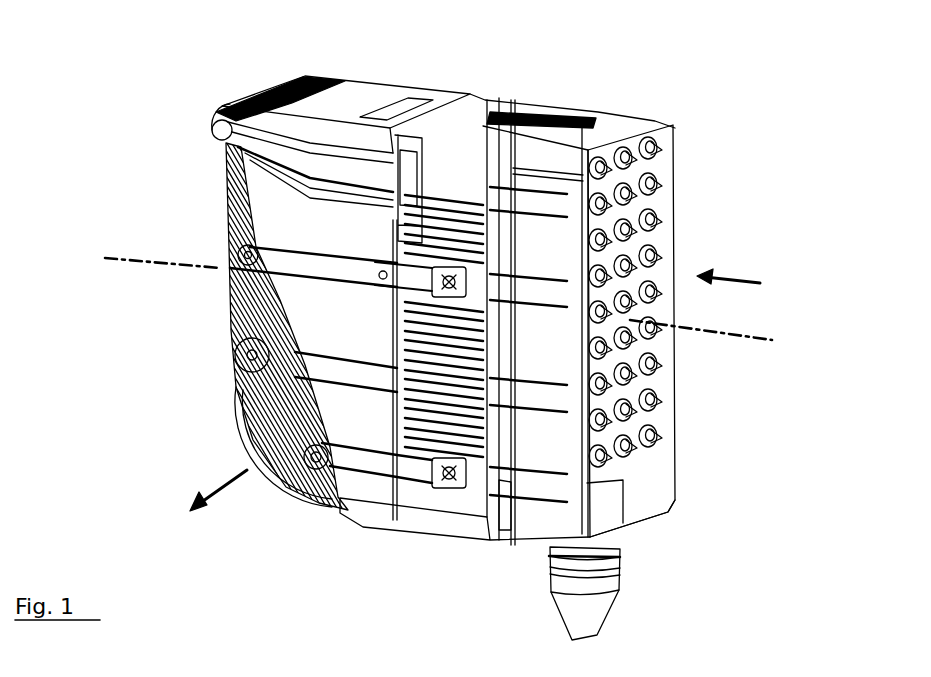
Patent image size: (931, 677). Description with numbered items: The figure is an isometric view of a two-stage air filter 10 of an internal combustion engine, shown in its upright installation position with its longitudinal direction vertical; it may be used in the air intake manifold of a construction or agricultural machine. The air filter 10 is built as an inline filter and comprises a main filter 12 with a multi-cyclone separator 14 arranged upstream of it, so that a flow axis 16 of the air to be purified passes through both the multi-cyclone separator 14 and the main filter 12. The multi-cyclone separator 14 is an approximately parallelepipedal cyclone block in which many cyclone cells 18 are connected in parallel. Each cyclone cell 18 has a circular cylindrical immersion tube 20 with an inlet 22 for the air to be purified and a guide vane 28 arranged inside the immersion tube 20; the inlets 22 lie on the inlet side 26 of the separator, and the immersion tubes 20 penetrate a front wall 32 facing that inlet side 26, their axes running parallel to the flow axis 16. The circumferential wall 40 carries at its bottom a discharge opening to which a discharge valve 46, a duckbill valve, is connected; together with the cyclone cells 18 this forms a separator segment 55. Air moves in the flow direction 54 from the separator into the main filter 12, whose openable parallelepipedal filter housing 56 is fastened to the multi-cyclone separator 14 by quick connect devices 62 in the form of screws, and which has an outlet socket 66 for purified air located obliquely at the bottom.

The two-stage air filter 10 is at (163, 62).
The main filter 12 is at (408, 90).
The multi-cyclone separator 14 is at (616, 96).
The flow axis 16 is at (772, 340).
The cyclone cell 18 is at (652, 145).
The immersion tube 20 is at (664, 172).
The inlet 22 is at (650, 183).
The inlet side 26 is at (708, 395).
The guide vane 28 is at (652, 220).
The front wall 32 is at (630, 482).
The circumferential wall 40 is at (620, 122).
The discharge valve 46 is at (594, 577).
The flow direction 54 is at (760, 283).
The separator segment 55 is at (649, 432).
The filter housing 56 is at (355, 97).
The quick connect device 62 is at (510, 540).
The outlet socket 66 is at (255, 440).